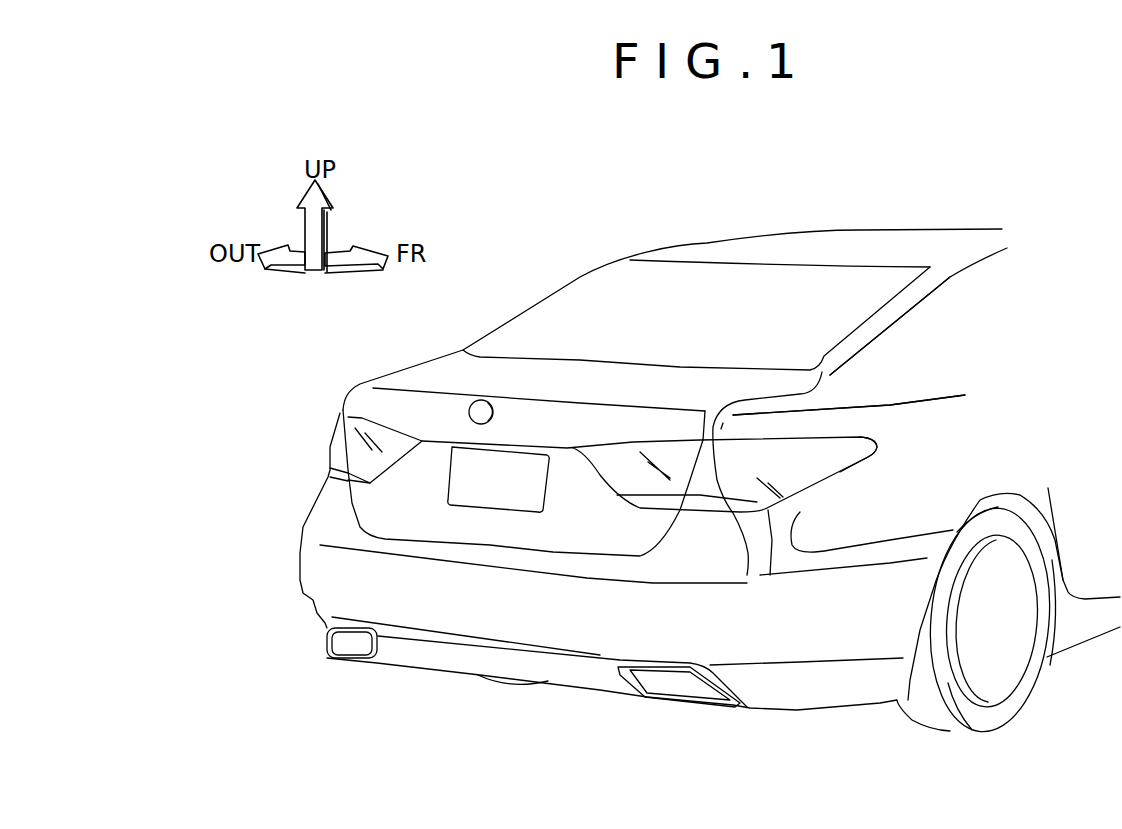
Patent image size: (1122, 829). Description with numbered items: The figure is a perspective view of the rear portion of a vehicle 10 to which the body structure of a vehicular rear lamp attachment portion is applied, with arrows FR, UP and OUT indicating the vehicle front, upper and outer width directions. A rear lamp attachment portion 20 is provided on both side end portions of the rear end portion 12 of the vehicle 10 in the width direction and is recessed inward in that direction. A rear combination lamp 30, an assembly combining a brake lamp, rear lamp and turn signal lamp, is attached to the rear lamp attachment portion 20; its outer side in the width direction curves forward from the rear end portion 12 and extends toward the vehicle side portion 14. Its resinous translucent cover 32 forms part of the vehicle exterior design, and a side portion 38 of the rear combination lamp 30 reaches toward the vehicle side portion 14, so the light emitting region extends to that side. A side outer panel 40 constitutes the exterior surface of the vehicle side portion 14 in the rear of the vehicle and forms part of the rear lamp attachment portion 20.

The vehicle 10 is at (963, 192).
The rear end portion 12 is at (577, 538).
The vehicle side portion 14 is at (918, 472).
The rear lamp attachment portion 20 is at (790, 440).
The rear combination lamp 30 is at (337, 443).
The cover 32 is at (332, 460).
The side portion 38 is at (843, 458).
The side outer panel 40 is at (886, 429).